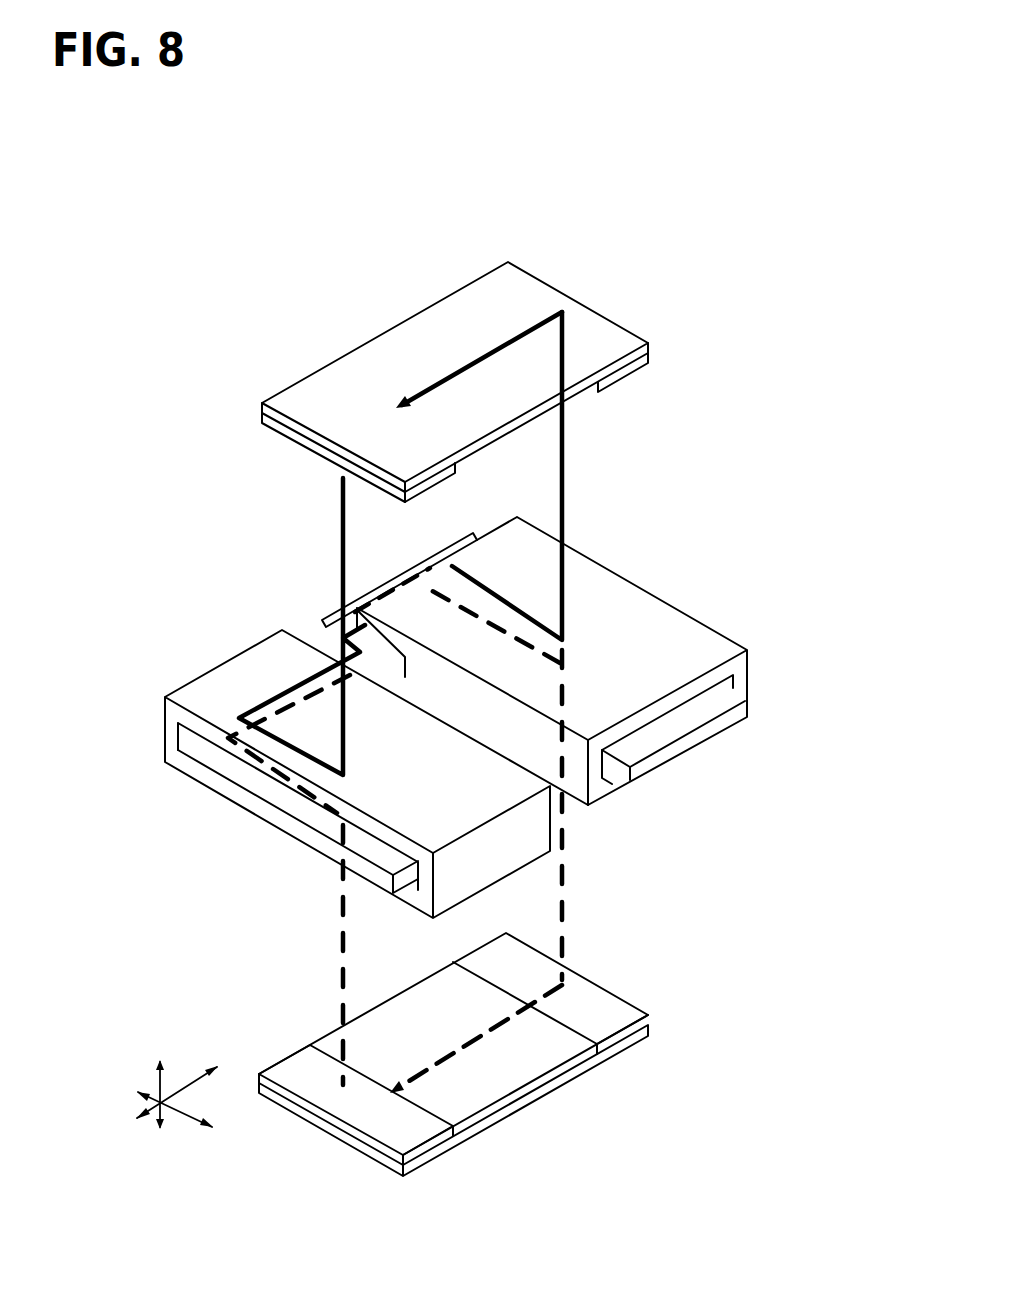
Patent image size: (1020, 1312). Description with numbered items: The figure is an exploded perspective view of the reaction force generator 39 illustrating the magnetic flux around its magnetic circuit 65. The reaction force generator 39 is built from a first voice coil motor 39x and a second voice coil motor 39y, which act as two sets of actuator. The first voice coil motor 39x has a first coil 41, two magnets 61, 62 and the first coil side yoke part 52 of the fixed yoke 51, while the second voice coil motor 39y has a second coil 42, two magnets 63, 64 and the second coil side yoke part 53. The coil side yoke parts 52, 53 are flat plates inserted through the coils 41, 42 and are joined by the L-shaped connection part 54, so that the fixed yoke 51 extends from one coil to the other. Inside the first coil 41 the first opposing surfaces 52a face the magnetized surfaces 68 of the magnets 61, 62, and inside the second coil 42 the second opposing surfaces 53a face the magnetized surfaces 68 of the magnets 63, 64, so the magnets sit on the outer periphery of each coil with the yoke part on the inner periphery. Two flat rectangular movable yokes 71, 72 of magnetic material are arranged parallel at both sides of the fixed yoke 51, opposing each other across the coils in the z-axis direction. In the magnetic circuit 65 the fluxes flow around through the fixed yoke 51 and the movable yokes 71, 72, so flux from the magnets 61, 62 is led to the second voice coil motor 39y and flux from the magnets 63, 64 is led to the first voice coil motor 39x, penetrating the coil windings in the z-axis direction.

The reaction force generator 39 is at (605, 268).
The first voice coil motor 39x is at (724, 608).
The second voice coil motor 39y is at (212, 646).
The first coil 41 is at (610, 556).
The second coil 42 is at (186, 682).
The fixed yoke 51 is at (183, 766).
The first coil side yoke part 52 is at (738, 710).
The first opposing surfaces 52a is at (672, 730).
The second coil side yoke part 53 is at (300, 832).
The second opposing surfaces 53a is at (243, 778).
The connection part 54 is at (332, 615).
The magnet 61 is at (645, 358).
The magnet 62 is at (630, 1000).
The magnet 63 is at (300, 428).
The magnet 64 is at (305, 1056).
The magnetic circuit 65 is at (405, 333).
The magnetized surface 68 is at (305, 458).
The movable yoke 71 is at (482, 300).
The movable yoke 72 is at (552, 1055).